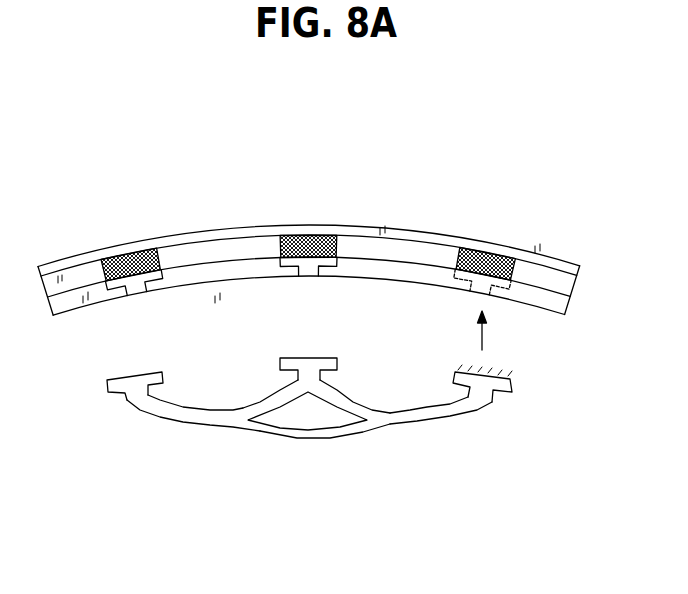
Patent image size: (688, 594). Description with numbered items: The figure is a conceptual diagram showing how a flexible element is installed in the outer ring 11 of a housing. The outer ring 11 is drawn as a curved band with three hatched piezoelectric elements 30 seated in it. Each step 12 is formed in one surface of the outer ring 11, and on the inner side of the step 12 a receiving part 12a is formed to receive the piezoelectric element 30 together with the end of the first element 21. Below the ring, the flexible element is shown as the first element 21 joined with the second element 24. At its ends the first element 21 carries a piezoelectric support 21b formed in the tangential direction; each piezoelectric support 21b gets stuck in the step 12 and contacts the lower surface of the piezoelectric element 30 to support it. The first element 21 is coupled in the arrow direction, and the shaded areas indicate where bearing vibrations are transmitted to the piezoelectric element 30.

The outer ring 11 is at (541, 250).
The piezoelectric element 30 is at (473, 250).
The step 12 is at (155, 292).
The receiving part 12a is at (306, 264).
The first element 21 is at (185, 421).
The piezoelectric support 21b is at (278, 367).
The second element 24 is at (303, 439).